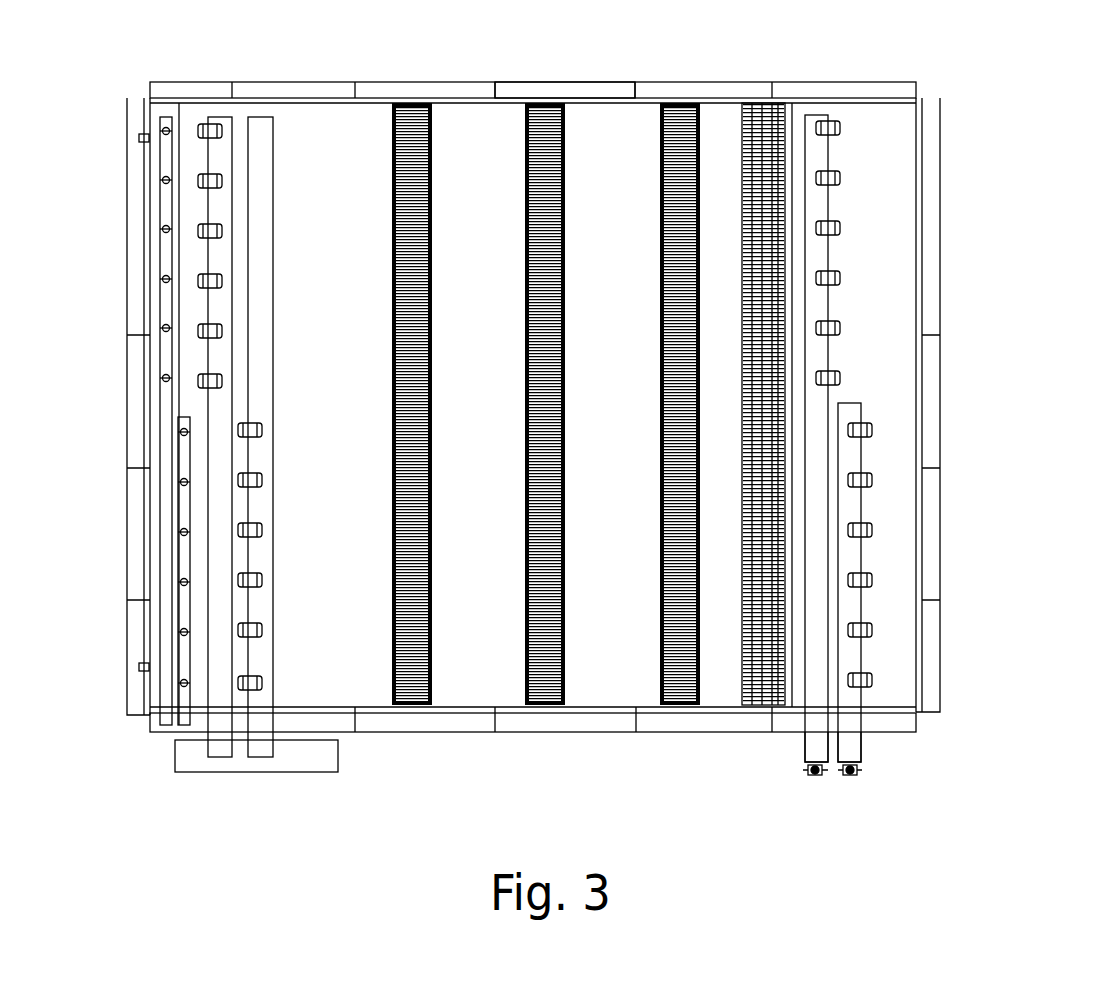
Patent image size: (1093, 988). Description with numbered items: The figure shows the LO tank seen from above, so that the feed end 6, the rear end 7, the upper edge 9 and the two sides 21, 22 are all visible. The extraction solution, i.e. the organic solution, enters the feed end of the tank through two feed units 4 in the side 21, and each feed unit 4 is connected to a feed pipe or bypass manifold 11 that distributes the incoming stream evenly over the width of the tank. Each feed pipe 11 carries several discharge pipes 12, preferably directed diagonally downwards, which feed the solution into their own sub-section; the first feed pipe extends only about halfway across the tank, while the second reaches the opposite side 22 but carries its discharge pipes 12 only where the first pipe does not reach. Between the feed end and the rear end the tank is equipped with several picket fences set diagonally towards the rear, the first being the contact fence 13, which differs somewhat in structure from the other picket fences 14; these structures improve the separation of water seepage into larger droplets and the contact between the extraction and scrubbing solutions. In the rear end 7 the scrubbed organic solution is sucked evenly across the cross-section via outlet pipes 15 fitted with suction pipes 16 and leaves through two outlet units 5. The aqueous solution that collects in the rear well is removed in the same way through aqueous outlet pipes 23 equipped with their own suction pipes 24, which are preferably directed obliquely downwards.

The feed unit 4 is at (815, 775).
The outlet unit 5 is at (220, 757).
The feed end 6 is at (822, 255).
The rear end 7 is at (145, 290).
The upper edge 9 is at (312, 100).
The feed pipe 11 is at (818, 727).
The discharge pipe 12 is at (833, 380).
The contact fence 13 is at (772, 92).
The picket fence 14 is at (417, 97).
The outlet pipe 15 is at (225, 262).
The suction pipe 16 is at (218, 327).
The side 21 is at (672, 722).
The side 22 is at (612, 85).
The aqueous outlet pipe 23 is at (167, 220).
The suction pipe 24 is at (162, 270).